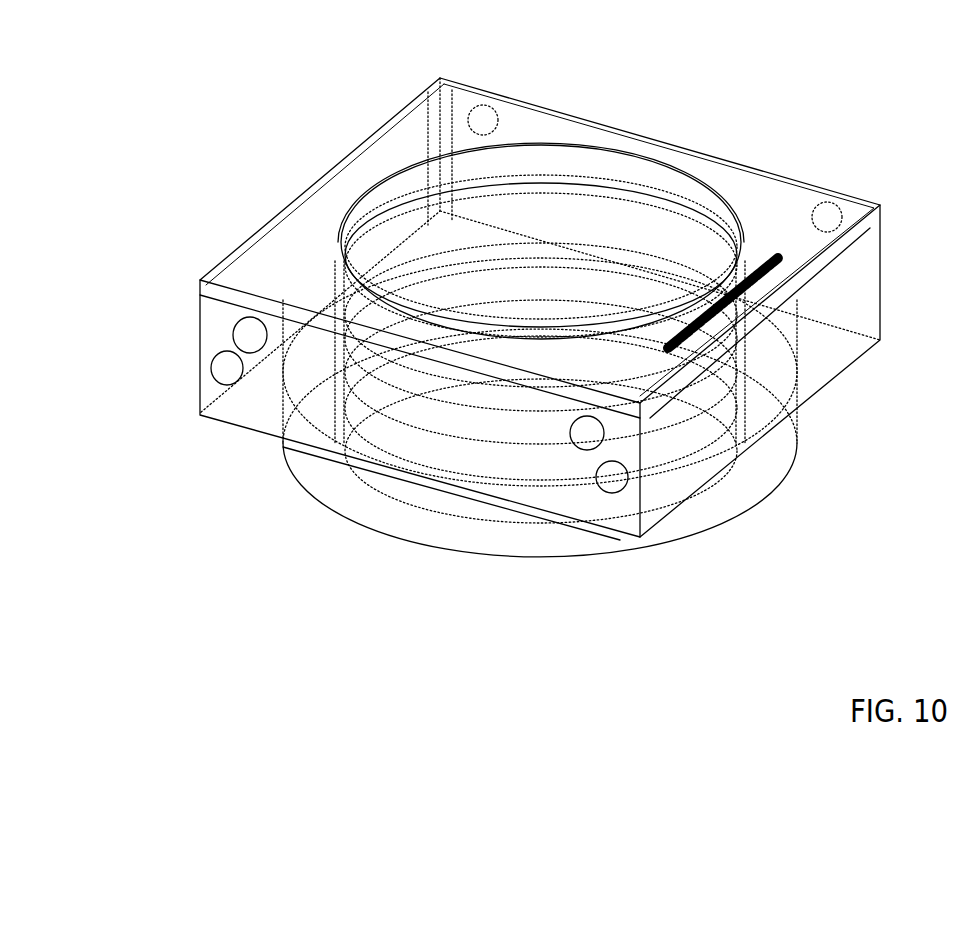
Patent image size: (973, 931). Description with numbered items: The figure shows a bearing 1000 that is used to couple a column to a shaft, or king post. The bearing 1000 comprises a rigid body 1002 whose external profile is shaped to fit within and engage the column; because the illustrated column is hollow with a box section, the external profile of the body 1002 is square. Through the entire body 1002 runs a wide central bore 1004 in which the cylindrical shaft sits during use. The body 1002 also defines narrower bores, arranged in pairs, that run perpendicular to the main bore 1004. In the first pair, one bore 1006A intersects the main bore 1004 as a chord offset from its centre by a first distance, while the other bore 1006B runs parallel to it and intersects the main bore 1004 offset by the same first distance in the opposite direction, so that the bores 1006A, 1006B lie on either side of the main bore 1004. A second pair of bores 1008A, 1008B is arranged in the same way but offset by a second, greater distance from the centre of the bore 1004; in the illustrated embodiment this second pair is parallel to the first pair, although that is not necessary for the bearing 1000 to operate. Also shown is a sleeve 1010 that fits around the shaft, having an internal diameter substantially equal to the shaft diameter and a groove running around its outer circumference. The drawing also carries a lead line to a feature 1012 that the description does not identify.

The bearing 1000 is at (502, 360).
The rigid body 1002 is at (372, 138).
The central bore 1004 is at (625, 230).
The first bore of first pair 1006A is at (232, 325).
The second bore of first pair 1006B is at (600, 448).
The first bore of second pair 1008A is at (222, 350).
The second bore of second pair 1008B is at (610, 495).
The sleeve 1010 is at (423, 538).
The cylindrical barrel 1012 is at (393, 407).